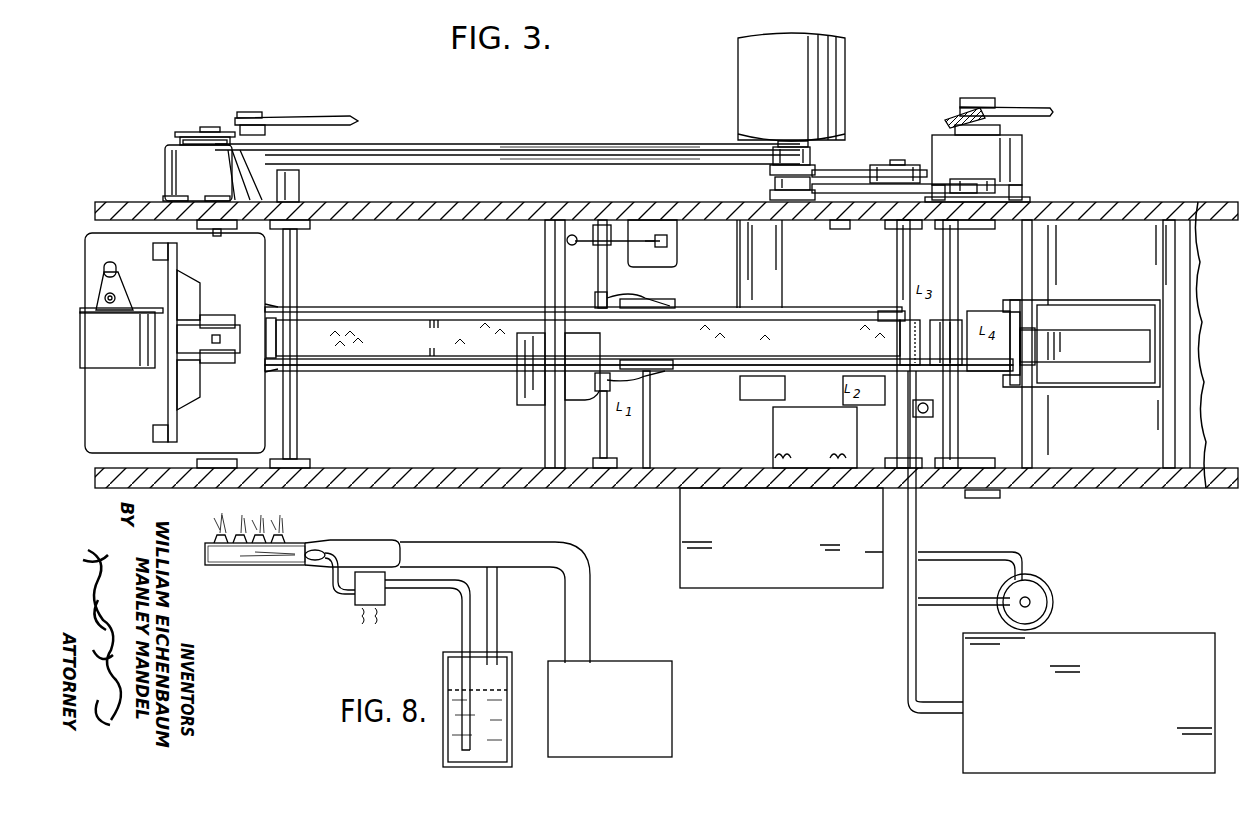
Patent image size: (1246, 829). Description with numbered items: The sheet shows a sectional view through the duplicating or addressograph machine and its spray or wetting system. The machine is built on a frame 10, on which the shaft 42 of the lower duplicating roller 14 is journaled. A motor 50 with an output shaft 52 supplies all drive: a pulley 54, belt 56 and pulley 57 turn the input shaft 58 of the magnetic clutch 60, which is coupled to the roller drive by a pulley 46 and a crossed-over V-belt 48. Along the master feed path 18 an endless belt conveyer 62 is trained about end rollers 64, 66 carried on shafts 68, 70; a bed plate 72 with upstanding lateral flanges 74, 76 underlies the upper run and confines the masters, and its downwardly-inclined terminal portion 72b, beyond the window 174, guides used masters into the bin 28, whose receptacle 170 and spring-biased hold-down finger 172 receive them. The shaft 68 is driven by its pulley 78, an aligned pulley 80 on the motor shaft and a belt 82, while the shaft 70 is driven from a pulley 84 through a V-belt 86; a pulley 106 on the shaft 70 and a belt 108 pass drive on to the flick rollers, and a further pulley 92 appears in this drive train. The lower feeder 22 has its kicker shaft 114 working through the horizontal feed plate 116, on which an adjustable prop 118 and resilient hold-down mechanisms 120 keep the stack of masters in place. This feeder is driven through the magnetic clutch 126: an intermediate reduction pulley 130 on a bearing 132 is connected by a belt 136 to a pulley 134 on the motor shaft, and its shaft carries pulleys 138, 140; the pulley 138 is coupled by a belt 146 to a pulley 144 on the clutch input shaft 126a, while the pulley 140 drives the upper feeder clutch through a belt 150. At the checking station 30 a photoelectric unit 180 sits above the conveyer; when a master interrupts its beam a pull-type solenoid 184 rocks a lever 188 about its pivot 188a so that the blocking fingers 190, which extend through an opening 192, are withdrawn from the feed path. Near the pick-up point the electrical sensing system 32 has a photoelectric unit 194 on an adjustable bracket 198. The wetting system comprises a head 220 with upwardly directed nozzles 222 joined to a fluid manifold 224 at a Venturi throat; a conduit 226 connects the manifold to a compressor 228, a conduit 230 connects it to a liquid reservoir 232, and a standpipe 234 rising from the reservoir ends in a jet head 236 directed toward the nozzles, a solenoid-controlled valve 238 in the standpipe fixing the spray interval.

In FIG. 3, the frame 10 is at (116, 199).
In FIG. 3, the feed plate 116 is at (116, 470).
In FIG. 3, the magnetic clutch 126 is at (159, 155).
In FIG. 3, the input shaft of magnetic clutch 126a is at (206, 127).
In FIG. 3, the pulley 144 is at (172, 130).
In FIG. 3, the belt 146 is at (221, 138).
In FIG. 3, the pulley 140 is at (256, 112).
In FIG. 3, the pulley 138 is at (260, 128).
In FIG. 3, the belt 150 is at (340, 117).
In FIG. 3, the bearing 132 is at (242, 177).
In FIG. 3, the intermediate pulley 130 is at (286, 144).
In FIG. 3, the endless belt 136 is at (575, 144).
In FIG. 3, the pulley 78 is at (309, 168).
In FIG. 3, the belt 82 is at (586, 164).
In FIG. 3, the motor 50 is at (841, 43).
In FIG. 3, the pulley 134 is at (775, 140).
In FIG. 3, the output shaft 52 is at (783, 143).
In FIG. 3, the pulley 80 is at (811, 160).
In FIG. 3, the pulley 84 is at (774, 178).
In FIG. 3, the pulley 54 is at (768, 192).
In FIG. 3, the V-belt 86 is at (847, 170).
In FIG. 3, the pulley 92 is at (891, 164).
In FIG. 3, the belt 56 is at (964, 178).
In FIG. 3, the pulley 57 is at (974, 177).
In FIG. 3, the magnetic clutch 60 is at (1020, 152).
In FIG. 3, the pulley 46 is at (997, 129).
In FIG. 3, the crossed-over endless V-belt 48 is at (944, 120).
In FIG. 3, the input shaft of magnetic clutch 58 is at (973, 98).
In FIG. 3, the shaft 114 is at (212, 232).
In FIG. 3, the shaft 68 is at (297, 273).
In FIG. 3, the delivery mechanism 22 is at (133, 417).
In FIG. 3, the adjustable prop 118 is at (117, 368).
In FIG. 3, the resilient hold-down mechanisms 120 is at (226, 315).
In FIG. 3, the end roller 64 is at (304, 307).
In FIG. 3, the lateral flange 76 is at (428, 307).
In FIG. 3, the bed plate 72 is at (482, 371).
In FIG. 3, the endless belt conveyer 62 is at (452, 363).
In FIG. 3, the lateral flange 74 is at (425, 370).
In FIG. 3, the feed path 18 is at (452, 317).
In FIG. 3, the photoelectric unit 180 is at (519, 405).
In FIG. 3, the checking station 30 is at (590, 410).
In FIG. 3, the pivot 188a is at (600, 268).
In FIG. 3, the rockable lever 188 is at (600, 244).
In FIG. 3, the pull-type solenoid 184 is at (676, 251).
In FIG. 3, the opening 192 is at (567, 237).
In FIG. 3, the blocking fingers 190 is at (620, 302).
In FIG. 3, the belt 108 is at (842, 203).
In FIG. 3, the pulley 106 is at (864, 204).
In FIG. 3, the shaft 70 is at (896, 244).
In FIG. 3, the shaft 42 is at (952, 254).
In FIG. 3, the end roller 66 is at (886, 309).
In FIG. 3, the nozzles 222 is at (898, 329).
In FIG. 8, the nozzles 222 is at (281, 532).
In FIG. 3, the window 174 is at (971, 324).
In FIG. 3, the printing roller 14 is at (966, 355).
In FIG. 3, the downwardly-inclined terminal portion 72b is at (1002, 372).
In FIG. 3, the electrical sensing system 32 is at (770, 408).
In FIG. 3, the photoelectric unit 194 is at (816, 407).
In FIG. 3, the adjustable bracket 198 is at (772, 456).
In FIG. 3, the fluid manifold 224 is at (903, 373).
In FIG. 8, the fluid manifold 224 is at (386, 537).
In FIG. 3, the solenoid-controlled valve 238 is at (932, 410).
In FIG. 8, the solenoid-controlled valve 238 is at (353, 603).
In FIG. 3, the conduit 226 is at (904, 660).
In FIG. 8, the conduit 226 is at (590, 606).
In FIG. 3, the standpipe 234 is at (991, 550).
In FIG. 8, the standpipe 234 is at (462, 621).
In FIG. 3, the conduit 230 is at (934, 604).
In FIG. 8, the conduit 230 is at (493, 613).
In FIG. 3, the liquid container 232 is at (1051, 593).
In FIG. 8, the liquid container 232 is at (442, 670).
In FIG. 3, the compressor 228 is at (963, 740).
In FIG. 8, the compressor 228 is at (672, 684).
In FIG. 3, the storage bin 28 is at (1111, 390).
In FIG. 3, the receptacle 170 is at (1123, 298).
In FIG. 3, the spring-biased hold-down finger 172 is at (1113, 338).
In FIG. 8, the head 220 is at (250, 565).
In FIG. 8, the jet head 236 is at (317, 564).